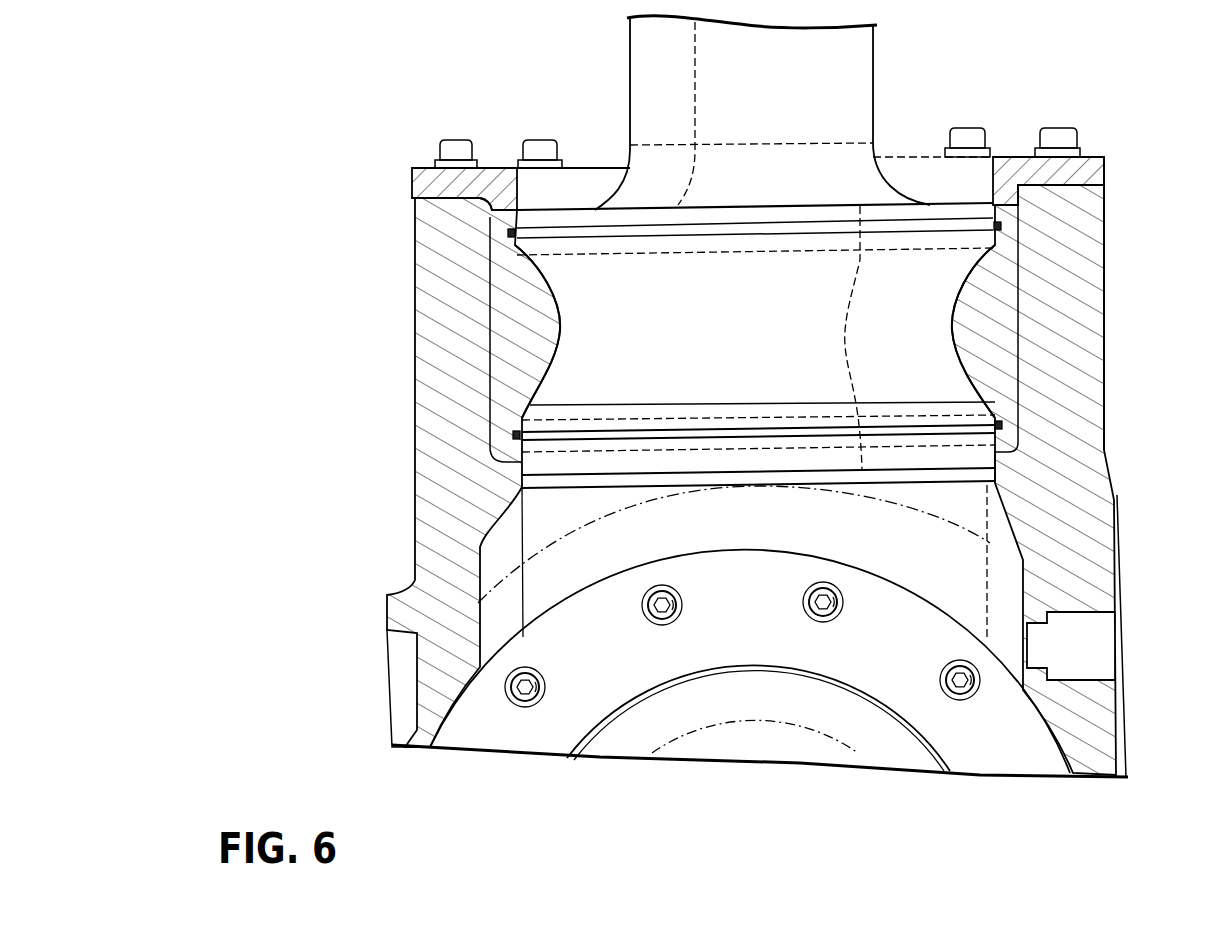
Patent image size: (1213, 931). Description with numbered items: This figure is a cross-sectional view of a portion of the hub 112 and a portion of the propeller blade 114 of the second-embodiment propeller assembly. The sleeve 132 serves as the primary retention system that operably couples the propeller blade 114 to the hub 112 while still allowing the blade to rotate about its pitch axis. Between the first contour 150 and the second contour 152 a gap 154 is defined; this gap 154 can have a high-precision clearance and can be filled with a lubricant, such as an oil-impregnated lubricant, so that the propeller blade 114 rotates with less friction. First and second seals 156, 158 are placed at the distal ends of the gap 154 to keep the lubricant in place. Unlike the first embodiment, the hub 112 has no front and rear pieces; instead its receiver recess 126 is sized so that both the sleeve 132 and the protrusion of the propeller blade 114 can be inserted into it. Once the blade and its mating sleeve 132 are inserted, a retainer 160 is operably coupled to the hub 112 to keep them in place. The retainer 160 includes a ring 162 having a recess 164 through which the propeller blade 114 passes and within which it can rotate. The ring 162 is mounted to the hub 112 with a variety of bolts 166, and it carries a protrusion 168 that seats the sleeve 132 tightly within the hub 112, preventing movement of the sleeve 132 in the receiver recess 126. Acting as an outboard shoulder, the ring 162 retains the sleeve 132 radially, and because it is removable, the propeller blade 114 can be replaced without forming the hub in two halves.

The hub 112 is at (1118, 500).
The propeller blade 114 is at (625, 92).
The receiver recess 126 is at (1000, 425).
The sleeve 132 is at (512, 282).
The first contour 150 is at (558, 331).
The second contour 152 is at (557, 312).
The gap 154 is at (955, 322).
The first seal 156 is at (1000, 227).
The second seal 158 is at (1033, 450).
The retainer 160 is at (1114, 161).
The ring 162 is at (1026, 172).
The recess 164 is at (988, 177).
The bolts 166 is at (522, 148).
The protrusion 168 is at (1015, 200).